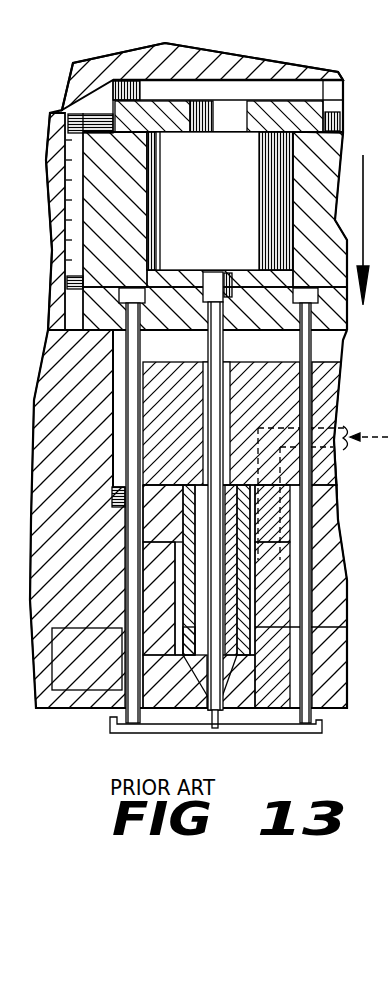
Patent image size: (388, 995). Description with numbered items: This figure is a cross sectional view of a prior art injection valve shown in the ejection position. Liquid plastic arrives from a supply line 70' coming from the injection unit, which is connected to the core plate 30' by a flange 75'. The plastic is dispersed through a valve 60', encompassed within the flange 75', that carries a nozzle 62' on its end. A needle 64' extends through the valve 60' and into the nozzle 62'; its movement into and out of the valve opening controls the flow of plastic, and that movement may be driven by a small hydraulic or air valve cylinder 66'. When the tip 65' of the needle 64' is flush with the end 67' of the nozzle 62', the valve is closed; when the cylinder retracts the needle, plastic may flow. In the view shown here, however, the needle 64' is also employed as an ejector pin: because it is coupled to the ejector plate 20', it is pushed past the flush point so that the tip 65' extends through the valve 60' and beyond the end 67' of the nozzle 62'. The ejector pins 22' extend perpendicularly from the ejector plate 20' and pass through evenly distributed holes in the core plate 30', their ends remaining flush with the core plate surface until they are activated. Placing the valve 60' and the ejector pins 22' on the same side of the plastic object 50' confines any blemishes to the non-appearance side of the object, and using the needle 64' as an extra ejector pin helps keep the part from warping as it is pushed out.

The ejector plate 20' is at (215, 203).
The ejector pins 22' is at (185, 519).
The core plate 30' is at (207, 519).
The plastic object 50' is at (216, 743).
The valve 60' is at (221, 597).
The nozzle 62' is at (272, 596).
The needle 64' is at (221, 423).
The tip 65' is at (200, 535).
The valve cylinder 66' is at (220, 201).
The end of the nozzle 67' is at (172, 664).
The supply line 70' is at (365, 415).
The flange 75' is at (313, 494).